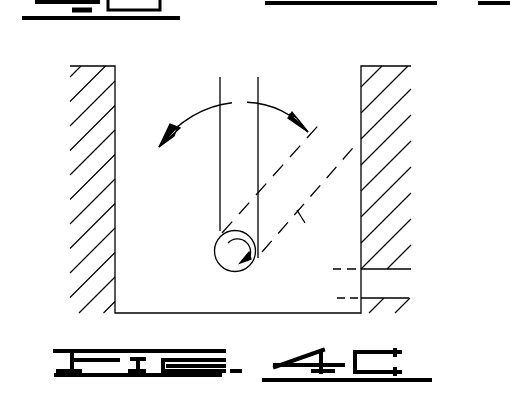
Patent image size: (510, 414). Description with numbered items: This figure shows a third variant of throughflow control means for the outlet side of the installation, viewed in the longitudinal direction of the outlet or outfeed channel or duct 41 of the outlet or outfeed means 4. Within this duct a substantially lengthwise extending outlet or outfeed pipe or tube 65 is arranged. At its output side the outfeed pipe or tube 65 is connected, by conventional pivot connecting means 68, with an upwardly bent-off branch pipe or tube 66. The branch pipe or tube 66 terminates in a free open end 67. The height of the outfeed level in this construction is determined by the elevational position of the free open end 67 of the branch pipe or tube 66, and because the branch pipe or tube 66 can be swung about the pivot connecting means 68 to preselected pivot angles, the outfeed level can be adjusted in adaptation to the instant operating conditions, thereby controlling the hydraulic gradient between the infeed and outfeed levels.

The outlet or outfeed means 4 is at (312, 93).
The outlet or outfeed channel or duct 41 is at (115, 194).
The outlet or outfeed pipe or tube 65 is at (232, 250).
The branch pipe or tube 66 is at (258, 205).
The free open end 67 is at (258, 77).
The pivot connecting means 68 is at (250, 266).